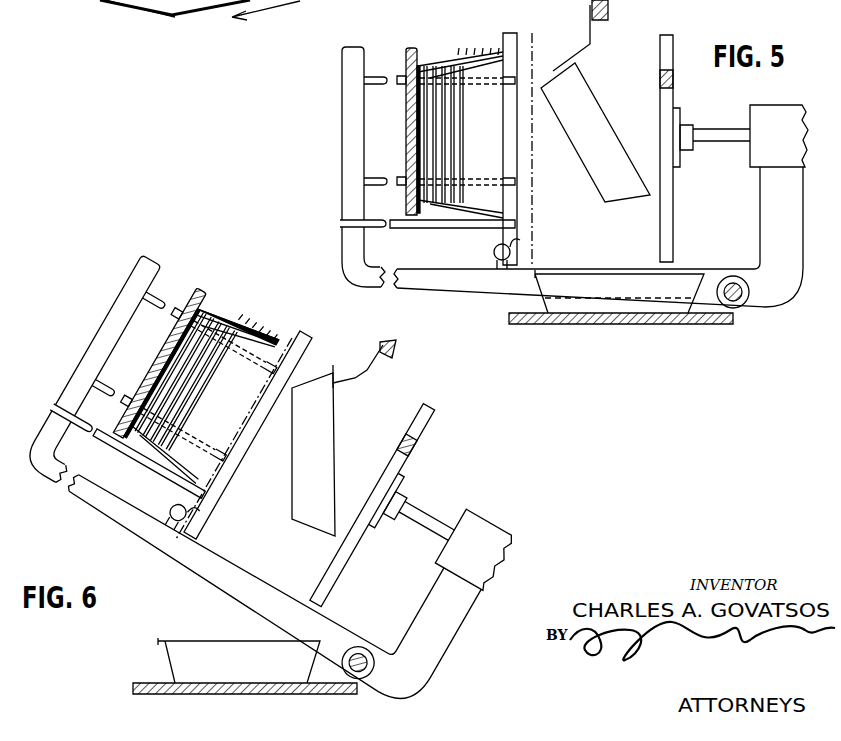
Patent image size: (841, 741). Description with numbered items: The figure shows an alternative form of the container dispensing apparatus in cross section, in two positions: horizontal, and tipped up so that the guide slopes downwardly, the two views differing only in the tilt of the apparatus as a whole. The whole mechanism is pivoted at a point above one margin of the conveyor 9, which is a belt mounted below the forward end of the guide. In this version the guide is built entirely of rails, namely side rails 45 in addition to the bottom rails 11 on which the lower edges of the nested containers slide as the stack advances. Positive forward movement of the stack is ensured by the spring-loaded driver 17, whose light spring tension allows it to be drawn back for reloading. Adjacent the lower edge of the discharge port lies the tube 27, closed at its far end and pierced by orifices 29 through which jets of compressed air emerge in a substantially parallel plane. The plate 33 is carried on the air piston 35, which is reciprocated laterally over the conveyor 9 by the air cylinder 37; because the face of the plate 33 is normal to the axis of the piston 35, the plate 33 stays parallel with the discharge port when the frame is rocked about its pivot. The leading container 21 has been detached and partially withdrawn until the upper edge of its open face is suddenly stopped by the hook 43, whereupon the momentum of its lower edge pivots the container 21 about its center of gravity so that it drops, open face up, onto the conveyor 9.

In FIG. 5, the conveyor belt 9 is at (692, 324).
In FIG. 6, the conveyor belt 9 is at (155, 683).
In FIG. 5, the bottom rails 11 is at (437, 229).
In FIG. 6, the bottom rails 11 is at (130, 463).
In FIG. 5, the spring-loaded driver 17 is at (406, 138).
In FIG. 6, the spring-loaded driver 17 is at (203, 295).
In FIG. 5, the leading container 21 is at (573, 143).
In FIG. 6, the leading container 21 is at (292, 450).
In FIG. 5, the air tube 27 is at (494, 253).
In FIG. 6, the air tube 27 is at (170, 500).
In FIG. 5, the orifices 29 is at (520, 241).
In FIG. 6, the orifices 29 is at (207, 512).
In FIG. 5, the plate 33 is at (668, 237).
In FIG. 6, the plate 33 is at (330, 577).
In FIG. 5, the air piston 35 is at (718, 128).
In FIG. 6, the air piston 35 is at (415, 512).
In FIG. 5, the air cylinder 37 is at (791, 147).
In FIG. 6, the air cylinder 37 is at (489, 557).
In FIG. 5, the hook 43 is at (580, 55).
In FIG. 6, the hook 43 is at (347, 382).
In FIG. 5, the side rails 45 is at (399, 77).
In FIG. 6, the side rails 45 is at (176, 316).